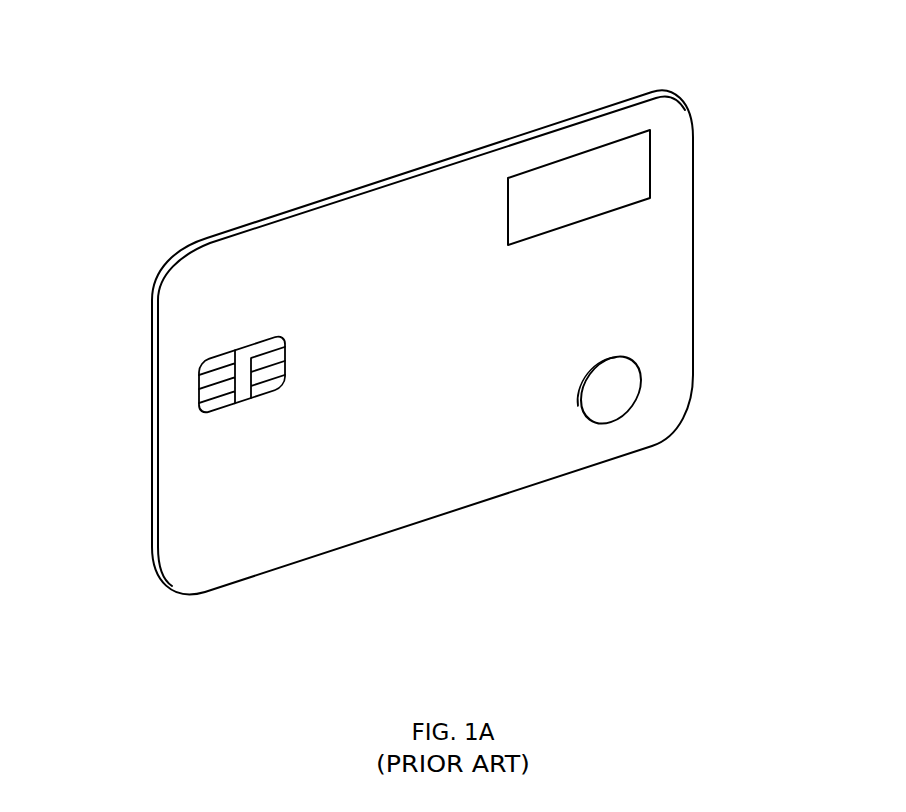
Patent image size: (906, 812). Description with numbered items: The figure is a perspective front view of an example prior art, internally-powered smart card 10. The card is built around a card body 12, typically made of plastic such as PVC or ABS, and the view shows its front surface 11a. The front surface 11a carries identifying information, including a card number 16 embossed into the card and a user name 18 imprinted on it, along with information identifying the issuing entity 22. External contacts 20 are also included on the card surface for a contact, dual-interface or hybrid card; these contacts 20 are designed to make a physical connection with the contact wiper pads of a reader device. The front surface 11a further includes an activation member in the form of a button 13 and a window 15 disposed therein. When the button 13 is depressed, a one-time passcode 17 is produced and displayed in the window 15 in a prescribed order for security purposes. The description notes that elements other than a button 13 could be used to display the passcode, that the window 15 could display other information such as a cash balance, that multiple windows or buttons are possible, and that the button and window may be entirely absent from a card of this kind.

The smart card 10 is at (204, 80).
The front surface 11a is at (483, 352).
The card body 12 is at (693, 243).
The button 13 is at (623, 400).
The window 15 is at (498, 226).
The card number 16 is at (205, 458).
The one-time passcode 17 is at (633, 180).
The user name 18 is at (238, 533).
The external contacts 20 is at (202, 390).
The issuing entity 22 is at (203, 312).